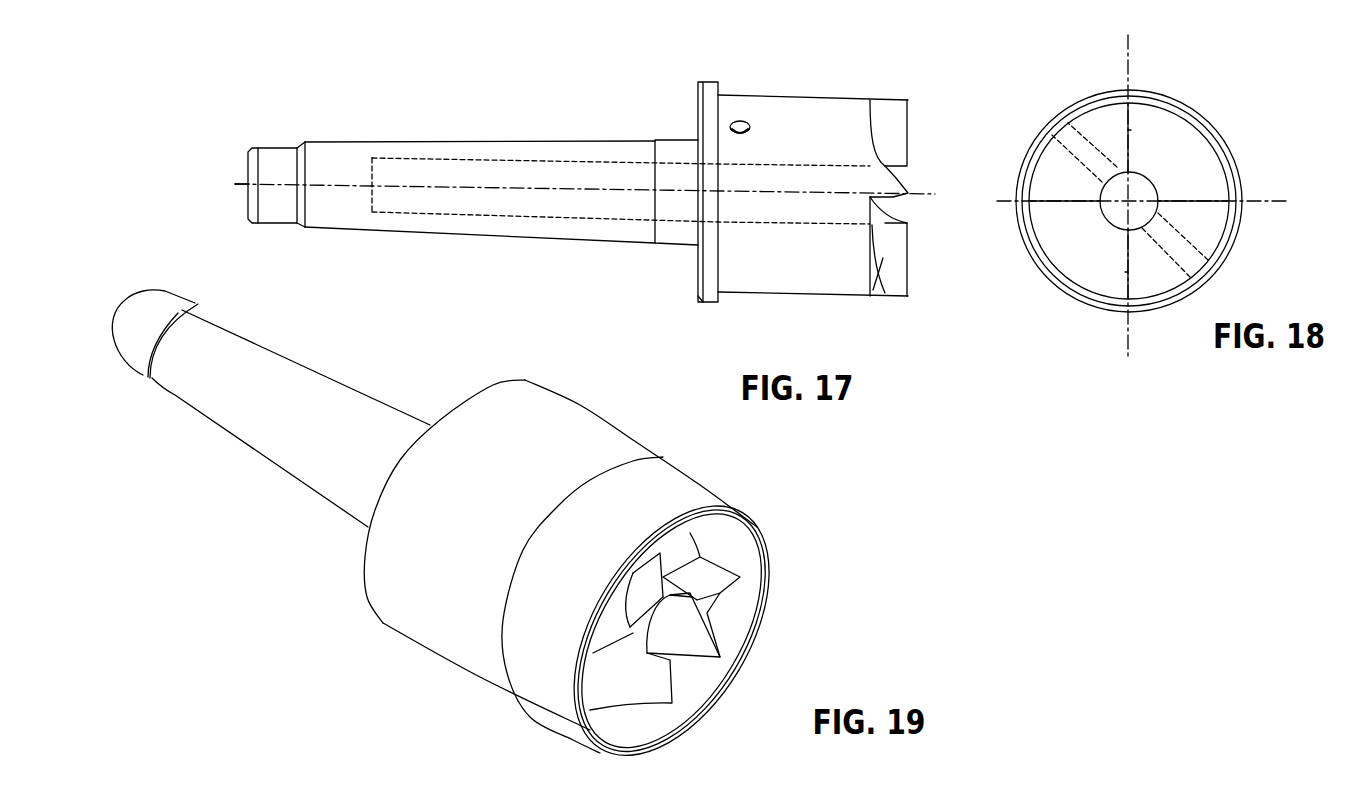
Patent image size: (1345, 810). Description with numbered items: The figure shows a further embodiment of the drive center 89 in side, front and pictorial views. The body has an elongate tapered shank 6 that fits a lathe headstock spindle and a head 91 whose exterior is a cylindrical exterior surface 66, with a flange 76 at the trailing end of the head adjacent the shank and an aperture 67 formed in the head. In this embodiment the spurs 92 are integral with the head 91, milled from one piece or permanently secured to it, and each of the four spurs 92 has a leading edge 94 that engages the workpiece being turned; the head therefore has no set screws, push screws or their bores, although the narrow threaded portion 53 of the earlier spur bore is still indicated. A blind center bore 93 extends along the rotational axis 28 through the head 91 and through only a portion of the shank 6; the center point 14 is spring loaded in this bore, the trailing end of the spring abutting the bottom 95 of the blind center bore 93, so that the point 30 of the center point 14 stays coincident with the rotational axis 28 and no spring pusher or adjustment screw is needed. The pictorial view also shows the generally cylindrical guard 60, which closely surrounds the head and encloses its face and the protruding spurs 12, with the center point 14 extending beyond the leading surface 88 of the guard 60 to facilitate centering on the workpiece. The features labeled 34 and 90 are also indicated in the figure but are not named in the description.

In FIG. 17, the shank 6 is at (461, 142).
In FIG. 19, the shank 6 is at (288, 366).
In FIG. 19, the spur 12 is at (641, 712).
In FIG. 19, the center point 14 is at (680, 632).
In FIG. 17, the rotational axis 28 is at (236, 185).
In FIG. 19, the point 30 is at (745, 636).
In FIG. 17, the shank tip 34 is at (256, 138).
In FIG. 17, the narrow threaded portion 53 is at (697, 122).
In FIG. 19, the guard 60 is at (605, 447).
In FIG. 17, the cylindrical exterior surface 66 is at (790, 294).
In FIG. 18, the cylindrical exterior surface 66 is at (1217, 260).
In FIG. 17, the aperture 67 is at (740, 121).
In FIG. 18, the aperture 67 is at (1067, 138).
In FIG. 17, the flange 76 is at (710, 300).
In FIG. 19, the leading surface 88 is at (742, 530).
In FIG. 19, the drive center 89 is at (300, 652).
In FIG. 17, the bore 90 is at (470, 214).
In FIG. 17, the head 91 is at (777, 95).
In FIG. 18, the head 91 is at (1204, 131).
In FIG. 17, the spur 92 is at (884, 262).
In FIG. 19, the spur 92 is at (607, 628).
In FIG. 17, the blind center bore 93 is at (914, 190).
In FIG. 18, the blind center bore 93 is at (1136, 219).
In FIG. 17, the leading edge 94 is at (907, 268).
In FIG. 18, the leading edge 94 is at (1132, 128).
In FIG. 19, the leading edge 94 is at (708, 590).
In FIG. 17, the bottom 95 is at (375, 170).